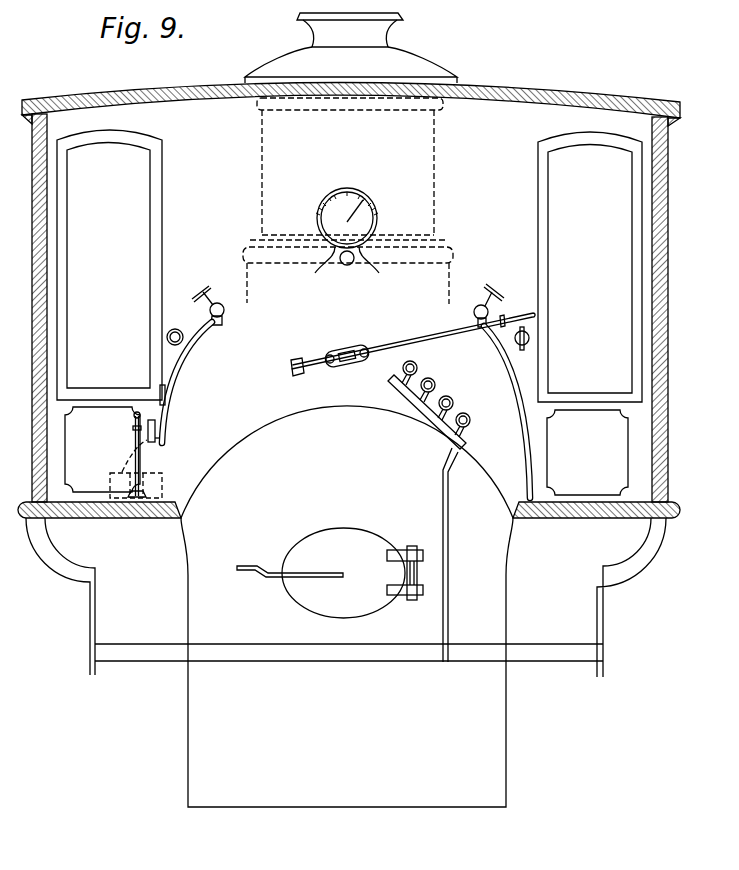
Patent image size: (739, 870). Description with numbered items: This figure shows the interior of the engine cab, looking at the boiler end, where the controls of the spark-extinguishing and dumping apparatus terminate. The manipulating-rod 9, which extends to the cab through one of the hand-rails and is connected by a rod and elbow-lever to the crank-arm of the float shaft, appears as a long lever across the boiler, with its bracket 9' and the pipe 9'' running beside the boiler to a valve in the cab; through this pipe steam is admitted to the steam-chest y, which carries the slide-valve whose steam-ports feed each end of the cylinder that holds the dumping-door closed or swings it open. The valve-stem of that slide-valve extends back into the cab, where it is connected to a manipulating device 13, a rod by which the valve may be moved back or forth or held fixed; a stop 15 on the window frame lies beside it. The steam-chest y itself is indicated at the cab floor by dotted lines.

The manipulating-rod 9 is at (435, 344).
The bracket 9' is at (173, 431).
The pipe 9'' is at (194, 364).
The stop 15 is at (166, 392).
The manipulating device 13 is at (135, 422).
The steam-chest y is at (128, 469).